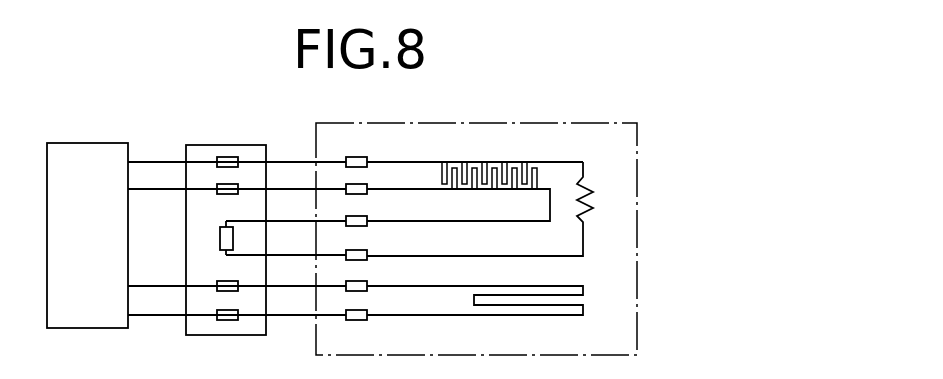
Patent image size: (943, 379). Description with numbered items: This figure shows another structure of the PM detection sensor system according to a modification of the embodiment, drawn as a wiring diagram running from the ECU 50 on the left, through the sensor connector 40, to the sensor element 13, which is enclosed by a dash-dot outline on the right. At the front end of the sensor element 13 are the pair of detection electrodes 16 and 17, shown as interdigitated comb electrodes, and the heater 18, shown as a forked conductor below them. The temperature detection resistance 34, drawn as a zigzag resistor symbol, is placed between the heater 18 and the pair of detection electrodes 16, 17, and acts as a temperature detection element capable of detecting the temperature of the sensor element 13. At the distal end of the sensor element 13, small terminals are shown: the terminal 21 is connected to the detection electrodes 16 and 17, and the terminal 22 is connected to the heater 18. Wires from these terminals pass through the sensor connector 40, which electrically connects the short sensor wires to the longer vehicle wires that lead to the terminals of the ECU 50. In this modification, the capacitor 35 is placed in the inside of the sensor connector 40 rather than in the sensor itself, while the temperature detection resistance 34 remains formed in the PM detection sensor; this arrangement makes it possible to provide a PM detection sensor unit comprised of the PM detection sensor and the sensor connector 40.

The sensor element 13 is at (638, 237).
The detection electrode 16 is at (457, 184).
The detection electrode 17 is at (498, 170).
The heater 18 is at (562, 316).
The terminal 21 is at (367, 167).
The terminal 22 is at (367, 291).
The temperature detection resistance 34 is at (593, 188).
The capacitor 35 is at (219, 240).
The sensor connector 40 is at (227, 145).
The ECU 50 is at (87, 143).